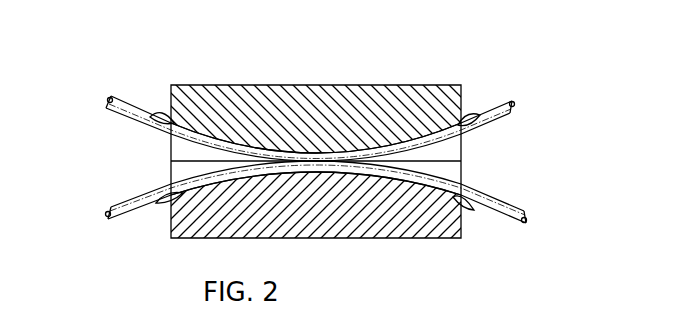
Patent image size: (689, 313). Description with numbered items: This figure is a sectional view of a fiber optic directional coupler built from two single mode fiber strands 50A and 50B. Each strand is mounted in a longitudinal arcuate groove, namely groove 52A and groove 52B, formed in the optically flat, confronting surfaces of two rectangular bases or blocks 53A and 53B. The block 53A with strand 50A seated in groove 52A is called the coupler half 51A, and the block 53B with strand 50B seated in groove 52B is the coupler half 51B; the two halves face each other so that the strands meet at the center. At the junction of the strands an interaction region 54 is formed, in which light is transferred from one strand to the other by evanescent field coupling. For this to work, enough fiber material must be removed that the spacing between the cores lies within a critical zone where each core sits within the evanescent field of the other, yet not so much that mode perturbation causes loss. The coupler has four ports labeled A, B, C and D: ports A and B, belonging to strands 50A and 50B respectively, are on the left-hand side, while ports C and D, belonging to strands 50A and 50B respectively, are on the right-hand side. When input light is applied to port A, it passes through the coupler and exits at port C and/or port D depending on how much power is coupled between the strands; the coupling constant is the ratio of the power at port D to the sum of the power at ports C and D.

The strand of single mode fiber optic material 50A is at (143, 122).
The strand of single mode fiber optic material 50B is at (142, 196).
The coupler half 51A is at (224, 80).
The coupler half 51B is at (200, 246).
The longitudinal arcuate groove 52A is at (162, 117).
The longitudinal arcuate groove 52B is at (157, 200).
The rectangular base or block 53A is at (386, 94).
The rectangular base or block 53B is at (341, 227).
The interaction region 54 is at (289, 142).
The port A is at (106, 100).
The port B is at (105, 216).
The port C is at (518, 104).
The port D is at (529, 224).